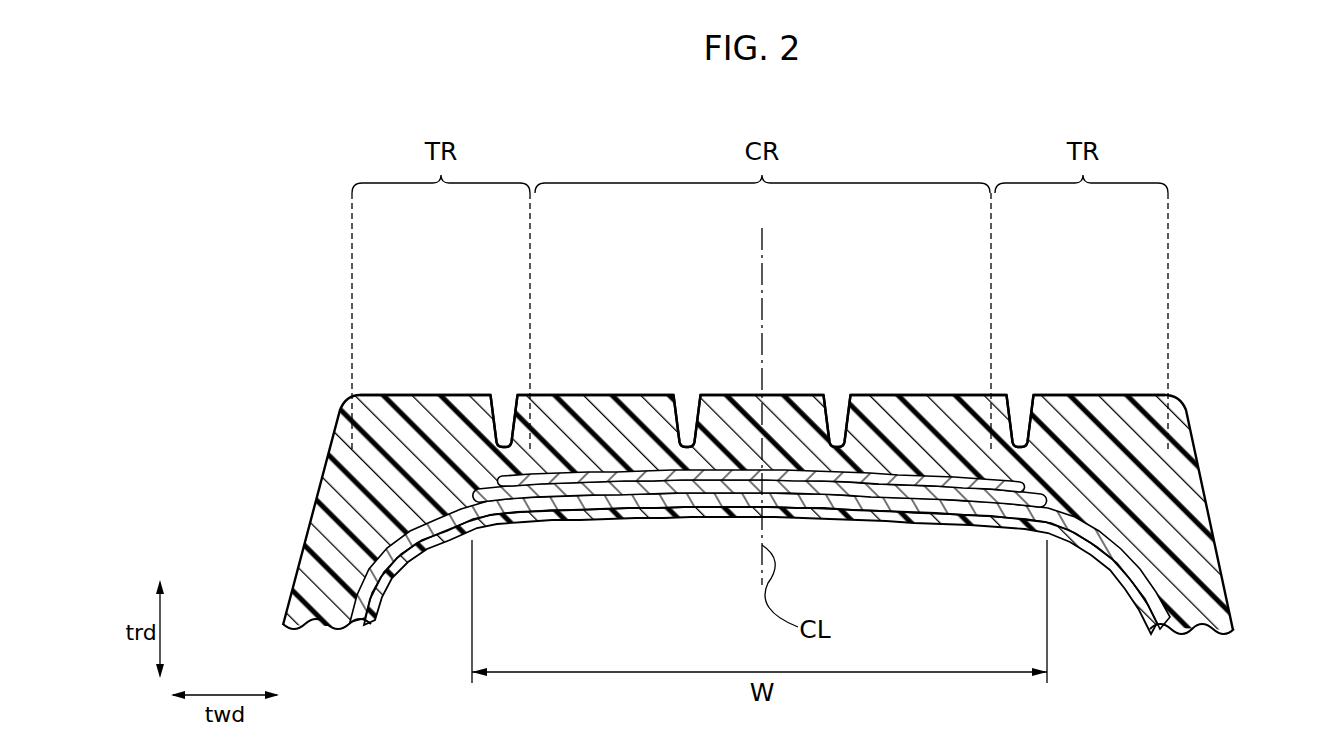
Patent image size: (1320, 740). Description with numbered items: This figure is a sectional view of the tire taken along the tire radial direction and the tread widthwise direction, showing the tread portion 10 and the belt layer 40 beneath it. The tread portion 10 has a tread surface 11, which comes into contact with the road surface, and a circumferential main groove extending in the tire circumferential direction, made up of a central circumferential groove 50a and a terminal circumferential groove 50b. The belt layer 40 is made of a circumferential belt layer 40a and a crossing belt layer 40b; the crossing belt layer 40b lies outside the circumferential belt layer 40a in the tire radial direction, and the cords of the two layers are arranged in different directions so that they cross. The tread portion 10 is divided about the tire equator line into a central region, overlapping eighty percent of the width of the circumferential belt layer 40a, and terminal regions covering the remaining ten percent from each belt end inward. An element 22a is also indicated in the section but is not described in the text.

The tread portion 10 is at (798, 388).
The tread surface 11 is at (927, 394).
The carcass layer 22a is at (1147, 560).
The belt layer 40 is at (760, 557).
The circumferential belt layer 40a is at (995, 491).
The crossing belt layer 40b is at (1012, 588).
The central circumferential groove 50a is at (694, 383).
The terminal circumferential groove 50b is at (507, 383).